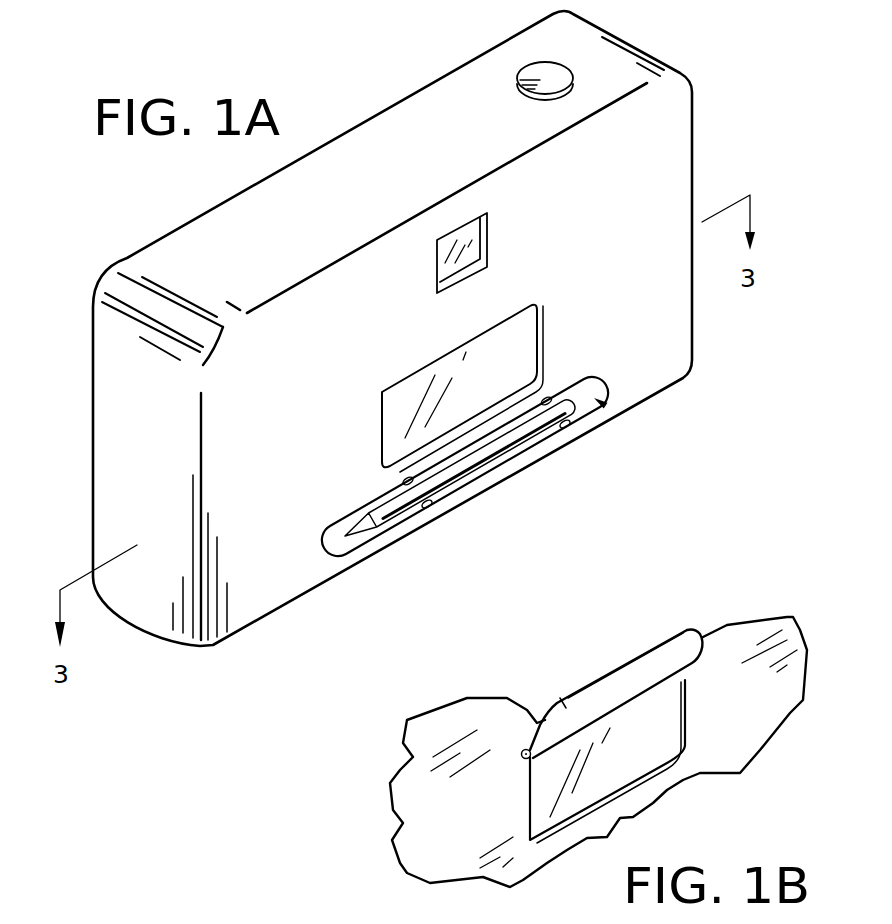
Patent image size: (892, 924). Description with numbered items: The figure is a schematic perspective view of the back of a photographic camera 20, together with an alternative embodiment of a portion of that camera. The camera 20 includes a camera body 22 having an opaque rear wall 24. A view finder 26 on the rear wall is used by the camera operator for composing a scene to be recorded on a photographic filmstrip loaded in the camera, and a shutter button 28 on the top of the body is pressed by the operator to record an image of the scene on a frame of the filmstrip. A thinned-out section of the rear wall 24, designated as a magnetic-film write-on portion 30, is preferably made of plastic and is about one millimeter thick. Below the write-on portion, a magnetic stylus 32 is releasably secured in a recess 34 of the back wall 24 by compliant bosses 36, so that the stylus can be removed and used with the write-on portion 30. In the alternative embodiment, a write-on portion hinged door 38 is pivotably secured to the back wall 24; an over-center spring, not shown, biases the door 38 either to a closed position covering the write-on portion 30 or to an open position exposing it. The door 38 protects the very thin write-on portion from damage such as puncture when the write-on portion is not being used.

In FIG. 1A, the photographic camera 20 is at (735, 318).
In FIG. 1A, the camera body 22 is at (118, 450).
In FIG. 1A, the opaque rear wall 24 is at (297, 381).
In FIG. 1B, the opaque rear wall 24 is at (452, 845).
In FIG. 1A, the view finder 26 is at (480, 240).
In FIG. 1A, the shutter button 28 is at (543, 70).
In FIG. 1A, the magnetic-film-write-on portion 30 is at (527, 338).
In FIG. 1B, the magnetic-film-write-on portion 30 is at (627, 773).
In FIG. 1A, the magnetic stylus 32 is at (470, 462).
In FIG. 1A, the recess 34 is at (610, 407).
In FIG. 1A, the compliant bosses 36 is at (430, 507).
In FIG. 1B, the write-on portion hinged door 38 is at (680, 658).